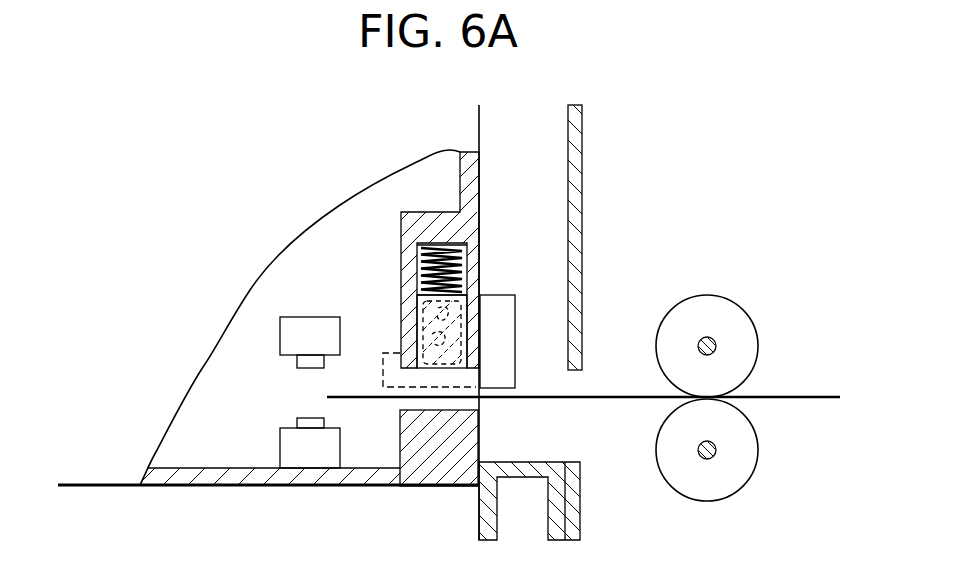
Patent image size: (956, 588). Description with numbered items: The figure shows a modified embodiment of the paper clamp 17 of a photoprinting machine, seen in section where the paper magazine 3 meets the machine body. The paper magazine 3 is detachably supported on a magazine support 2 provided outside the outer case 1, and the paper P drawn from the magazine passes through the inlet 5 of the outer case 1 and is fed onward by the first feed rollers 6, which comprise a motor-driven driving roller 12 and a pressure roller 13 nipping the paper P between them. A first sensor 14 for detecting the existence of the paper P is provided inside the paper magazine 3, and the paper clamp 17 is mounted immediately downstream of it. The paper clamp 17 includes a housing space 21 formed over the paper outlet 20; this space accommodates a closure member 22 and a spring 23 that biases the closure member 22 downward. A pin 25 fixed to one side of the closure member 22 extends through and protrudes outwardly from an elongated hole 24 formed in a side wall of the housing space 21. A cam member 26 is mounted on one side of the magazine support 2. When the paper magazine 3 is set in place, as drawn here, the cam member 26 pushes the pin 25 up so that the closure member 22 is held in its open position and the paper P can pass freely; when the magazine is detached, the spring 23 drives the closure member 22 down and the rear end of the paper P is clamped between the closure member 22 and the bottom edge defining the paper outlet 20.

The outer case 1 is at (568, 122).
The magazine support 2 is at (90, 484).
The paper magazine 3 is at (232, 457).
The inlet 5 is at (577, 430).
The first feed rollers 6 is at (744, 371).
The driving roller 12 is at (722, 312).
The pressure roller 13 is at (745, 450).
The first sensor 14 is at (274, 341).
The paper clamp 17 is at (477, 268).
The paper outlet 20 is at (430, 403).
The housing space 21 is at (415, 262).
The closure member 22 is at (470, 297).
The spring 23 is at (440, 246).
The elongated hole 24 is at (432, 333).
The pin 25 is at (433, 311).
The cam member 26 is at (500, 343).
The paper P is at (805, 397).